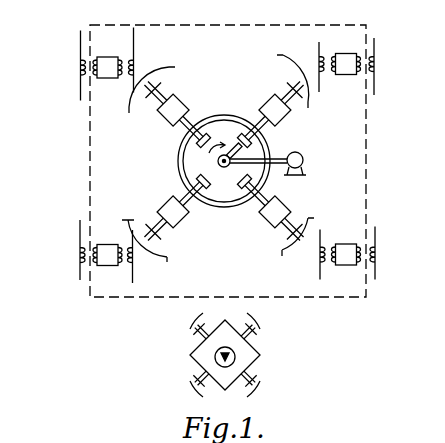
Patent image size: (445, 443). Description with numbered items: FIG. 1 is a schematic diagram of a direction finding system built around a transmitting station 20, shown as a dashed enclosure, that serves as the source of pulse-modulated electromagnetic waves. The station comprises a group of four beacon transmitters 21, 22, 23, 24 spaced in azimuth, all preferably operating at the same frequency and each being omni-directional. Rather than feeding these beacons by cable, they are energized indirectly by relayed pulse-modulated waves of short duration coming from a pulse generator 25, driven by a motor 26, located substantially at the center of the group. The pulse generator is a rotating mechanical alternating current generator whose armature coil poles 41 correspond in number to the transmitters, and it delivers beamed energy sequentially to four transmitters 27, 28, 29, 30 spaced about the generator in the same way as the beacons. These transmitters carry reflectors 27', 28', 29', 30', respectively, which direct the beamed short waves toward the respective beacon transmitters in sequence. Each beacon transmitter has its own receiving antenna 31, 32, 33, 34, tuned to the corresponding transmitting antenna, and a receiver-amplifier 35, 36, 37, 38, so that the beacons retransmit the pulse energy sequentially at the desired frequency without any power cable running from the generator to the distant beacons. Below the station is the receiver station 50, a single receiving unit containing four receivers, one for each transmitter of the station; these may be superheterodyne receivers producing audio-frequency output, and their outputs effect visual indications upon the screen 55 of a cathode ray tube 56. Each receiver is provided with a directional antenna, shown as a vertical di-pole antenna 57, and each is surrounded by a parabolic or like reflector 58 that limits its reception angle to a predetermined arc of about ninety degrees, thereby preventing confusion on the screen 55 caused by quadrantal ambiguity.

The transmitting station 20 is at (375, 154).
The beacon transmitter 21 is at (67, 63).
The beacon transmitter 22 is at (388, 65).
The beacon transmitter 23 is at (388, 256).
The beacon transmitter 24 is at (67, 254).
The pulse generator 25 is at (266, 178).
The motor 26 is at (304, 159).
The transmitter 27 is at (168, 110).
The reflector 27' is at (164, 90).
The transmitter 28 is at (282, 110).
The reflector 28' is at (279, 81).
The transmitter 29 is at (280, 211).
The reflector 29' is at (282, 238).
The transmitter 30 is at (171, 211).
The reflector 30' is at (161, 241).
The receiving antenna 31 is at (149, 60).
The receiving antenna 32 is at (308, 65).
The receiving antenna 33 is at (308, 257).
The receiving antenna 34 is at (145, 258).
The receiver-amplifier 35 is at (107, 56).
The receiver-amplifier 36 is at (346, 54).
The receiver-amplifier 37 is at (346, 267).
The receiver-amplifier 38 is at (107, 271).
The armature coil pole 41 is at (243, 139).
The receiver station 50 is at (258, 358).
The screen 55 is at (216, 355).
The cathode ray tube 56 is at (214, 365).
The vertical di-pole antenna 57 is at (188, 329).
The reflector 58 is at (246, 313).